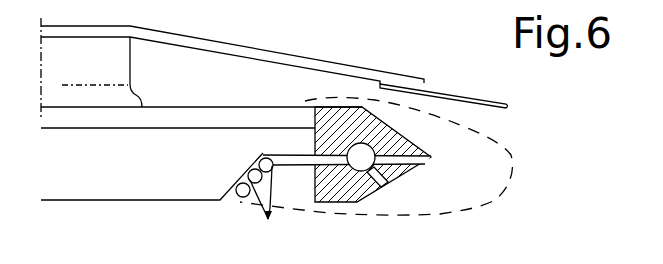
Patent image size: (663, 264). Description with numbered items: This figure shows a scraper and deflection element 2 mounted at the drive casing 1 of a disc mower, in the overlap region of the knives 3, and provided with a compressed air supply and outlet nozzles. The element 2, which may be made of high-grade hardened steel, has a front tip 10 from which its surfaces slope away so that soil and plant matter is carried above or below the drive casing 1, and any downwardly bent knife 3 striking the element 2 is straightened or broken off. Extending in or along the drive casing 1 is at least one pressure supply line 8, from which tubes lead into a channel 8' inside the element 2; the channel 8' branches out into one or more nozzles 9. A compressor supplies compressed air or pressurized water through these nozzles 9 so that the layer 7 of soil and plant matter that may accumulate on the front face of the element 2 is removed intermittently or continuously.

The drive casing 1 is at (129, 191).
The scraper and deflection element 2 is at (405, 168).
The knife 3 is at (452, 94).
The layer of soil and plant matter 7 is at (515, 163).
The pressure supply line 8 is at (258, 207).
The channel 8' is at (361, 200).
The nozzle 9 is at (381, 183).
The tip 10 is at (436, 158).